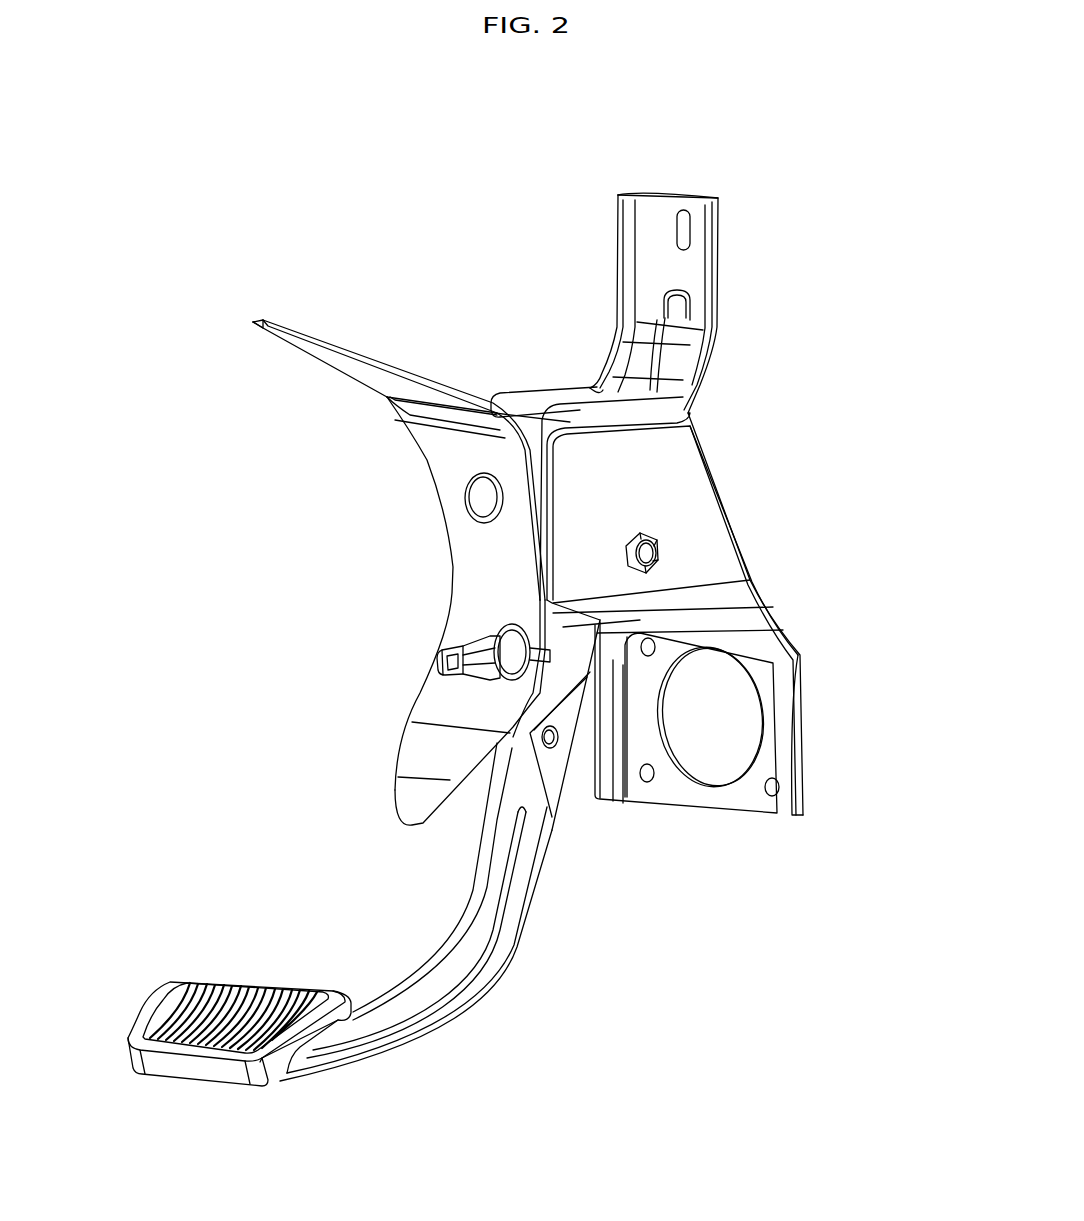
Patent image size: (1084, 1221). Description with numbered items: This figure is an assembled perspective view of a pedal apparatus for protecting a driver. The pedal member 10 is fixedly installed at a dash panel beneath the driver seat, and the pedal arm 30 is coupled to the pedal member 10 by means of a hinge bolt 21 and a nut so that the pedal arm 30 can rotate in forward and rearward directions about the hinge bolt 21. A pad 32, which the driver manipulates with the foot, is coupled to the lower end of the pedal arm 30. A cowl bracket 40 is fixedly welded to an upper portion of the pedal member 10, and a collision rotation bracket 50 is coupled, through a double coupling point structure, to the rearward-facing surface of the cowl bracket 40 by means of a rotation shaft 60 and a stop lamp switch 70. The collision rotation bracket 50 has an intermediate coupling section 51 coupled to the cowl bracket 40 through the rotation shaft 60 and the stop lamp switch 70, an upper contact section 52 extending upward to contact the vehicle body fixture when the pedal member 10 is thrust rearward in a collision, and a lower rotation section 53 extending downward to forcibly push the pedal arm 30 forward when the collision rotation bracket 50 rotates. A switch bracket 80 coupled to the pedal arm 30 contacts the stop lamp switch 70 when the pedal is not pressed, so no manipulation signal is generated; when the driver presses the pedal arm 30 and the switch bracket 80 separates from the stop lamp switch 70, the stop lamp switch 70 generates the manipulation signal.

The pedal member 10 is at (687, 473).
The hinge bolt 21 is at (652, 553).
The pedal arm 30 is at (513, 958).
The pad 32 is at (168, 988).
The cowl bracket 40 is at (655, 217).
The collision rotation bracket 50 is at (399, 527).
The intermediate coupling section 51 is at (470, 568).
The upper contact section 52 is at (310, 338).
The lower rotation section 53 is at (415, 795).
The rotation shaft 60 is at (470, 503).
The stop lamp switch 70 is at (455, 660).
The switch bracket 80 is at (567, 627).